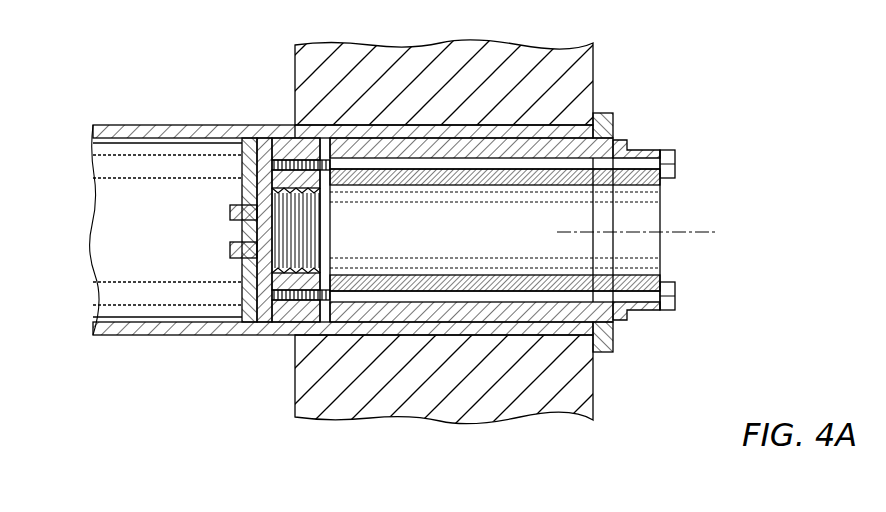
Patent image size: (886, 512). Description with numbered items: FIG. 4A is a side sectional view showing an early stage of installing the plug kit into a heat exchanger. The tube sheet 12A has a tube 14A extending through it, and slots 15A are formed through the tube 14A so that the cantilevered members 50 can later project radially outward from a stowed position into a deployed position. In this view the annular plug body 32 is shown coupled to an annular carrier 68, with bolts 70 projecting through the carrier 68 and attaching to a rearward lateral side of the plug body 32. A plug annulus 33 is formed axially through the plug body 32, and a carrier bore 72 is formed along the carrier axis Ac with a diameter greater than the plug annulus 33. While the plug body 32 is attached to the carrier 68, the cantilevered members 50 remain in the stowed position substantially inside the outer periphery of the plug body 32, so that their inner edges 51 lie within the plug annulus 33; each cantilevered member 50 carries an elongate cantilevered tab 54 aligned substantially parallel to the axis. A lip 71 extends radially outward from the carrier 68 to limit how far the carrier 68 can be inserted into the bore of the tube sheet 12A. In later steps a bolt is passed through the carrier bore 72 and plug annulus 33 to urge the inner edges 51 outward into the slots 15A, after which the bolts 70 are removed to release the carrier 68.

The tube sheet 12A is at (437, 397).
The tube 14A is at (132, 338).
The slots 15A is at (293, 125).
The plug body 32 is at (240, 160).
The plug annulus 33 is at (322, 235).
The cantilevered members 50 is at (260, 335).
The inner edges 51 is at (231, 226).
The cantilevered tab 54 is at (233, 255).
The annular carrier 68 is at (649, 137).
The bolts 70 is at (676, 164).
The lip 71 is at (613, 335).
The carrier bore 72 is at (510, 243).
The carrier axis Ac is at (715, 232).